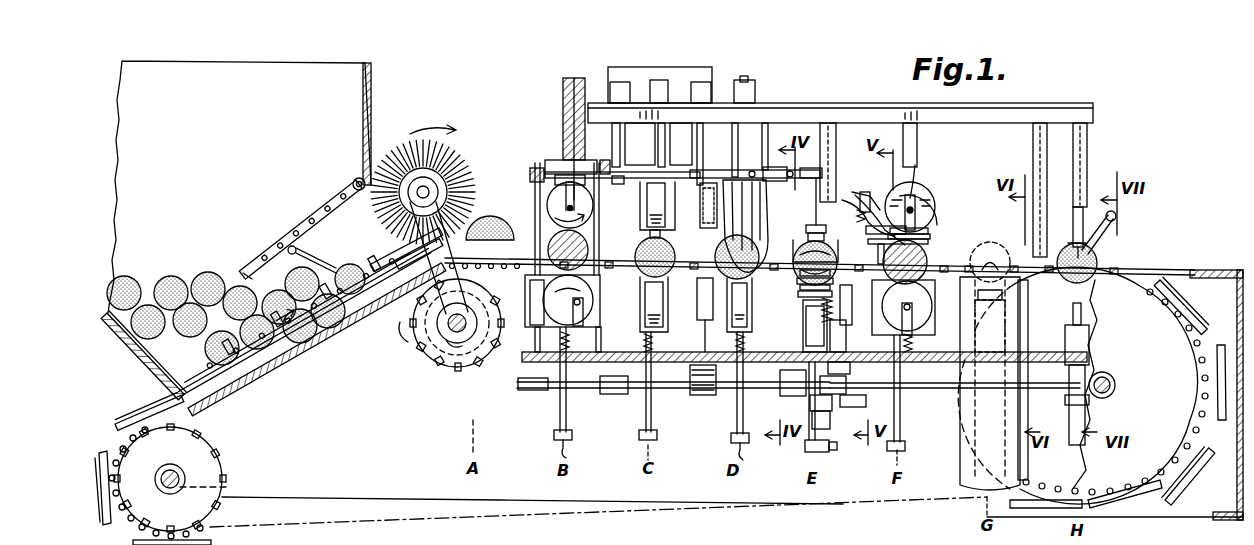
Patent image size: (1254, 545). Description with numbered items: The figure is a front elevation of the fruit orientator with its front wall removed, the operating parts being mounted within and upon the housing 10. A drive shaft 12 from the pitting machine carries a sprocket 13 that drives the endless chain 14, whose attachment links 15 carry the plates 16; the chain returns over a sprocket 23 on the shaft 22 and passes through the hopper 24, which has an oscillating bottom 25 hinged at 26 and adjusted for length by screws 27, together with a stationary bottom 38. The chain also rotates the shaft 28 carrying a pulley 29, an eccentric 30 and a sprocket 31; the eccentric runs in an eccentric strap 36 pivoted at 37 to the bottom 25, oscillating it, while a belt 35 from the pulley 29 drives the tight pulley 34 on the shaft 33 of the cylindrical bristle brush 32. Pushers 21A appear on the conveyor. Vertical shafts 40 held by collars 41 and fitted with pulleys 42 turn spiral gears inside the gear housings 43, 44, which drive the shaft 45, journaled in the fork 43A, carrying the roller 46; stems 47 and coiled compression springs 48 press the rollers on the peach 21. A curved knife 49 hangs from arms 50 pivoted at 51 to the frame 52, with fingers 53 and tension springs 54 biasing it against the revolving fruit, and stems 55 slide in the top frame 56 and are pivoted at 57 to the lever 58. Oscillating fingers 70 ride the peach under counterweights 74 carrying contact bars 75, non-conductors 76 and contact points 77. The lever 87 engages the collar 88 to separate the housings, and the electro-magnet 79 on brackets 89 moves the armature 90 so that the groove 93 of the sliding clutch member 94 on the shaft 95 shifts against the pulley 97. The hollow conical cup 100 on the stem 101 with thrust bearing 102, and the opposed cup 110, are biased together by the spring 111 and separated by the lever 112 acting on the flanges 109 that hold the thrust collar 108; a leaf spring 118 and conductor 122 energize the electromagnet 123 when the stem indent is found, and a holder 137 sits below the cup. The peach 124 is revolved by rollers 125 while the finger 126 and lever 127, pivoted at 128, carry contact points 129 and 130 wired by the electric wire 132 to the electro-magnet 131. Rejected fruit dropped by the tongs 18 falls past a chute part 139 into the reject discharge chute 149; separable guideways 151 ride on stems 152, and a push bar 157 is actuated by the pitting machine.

The housing 10 is at (445, 438).
The drive shaft 12 is at (1098, 374).
The sprocket 13 is at (1083, 385).
The endless chain 14 is at (214, 528).
The attachment links 15 is at (1203, 430).
The plates 16 is at (390, 270).
The tongs 18 is at (312, 352).
The peach 21 is at (1098, 262).
The conveyor pushers 21A is at (330, 347).
The shaft 22 is at (180, 472).
The sprocket 23 is at (218, 455).
The hopper 24 is at (372, 83).
The oscillating bottom 25 is at (252, 266).
The hinge 26 is at (357, 178).
The screws 27 is at (305, 226).
The shaft 28 is at (466, 320).
The pulley 29 is at (460, 370).
The eccentric 30 is at (415, 358).
The sprocket 31 is at (442, 370).
The cylindrical bristle brush 32 is at (450, 158).
The shaft 33 is at (448, 185).
The tight pulley 34 is at (405, 218).
The belt 35 is at (405, 255).
The eccentric strap 36 is at (405, 333).
The pivot 37 is at (302, 252).
The stationary bottom 38 is at (278, 373).
The vertical shafts 40 is at (500, 242).
The collars 41 is at (588, 368).
The pulleys 42 is at (535, 390).
The gear housing 43 is at (530, 284).
The fork 43A is at (752, 318).
The gear housing 44 is at (533, 192).
The shaft 45 is at (772, 295).
The roller 46 is at (546, 204).
The stems 47 is at (578, 78).
The coiled compression springs 48 is at (920, 347).
The curved knife 49 is at (657, 217).
The arms 50 is at (535, 238).
The pivot 51 is at (545, 160).
The frame 52 is at (552, 160).
The fingers 53 is at (535, 168).
The tension springs 54 is at (545, 178).
The stems 55 is at (680, 150).
The top frame 56 is at (866, 108).
The pivot 57 is at (625, 82).
The lever 58 is at (690, 70).
The oscillating fingers 70 is at (768, 228).
The counterweights 74 is at (770, 167).
The electrical contact bars 75 is at (665, 168).
The non-conductors 76 is at (749, 146).
The electrical contact points 77 is at (805, 178).
The electro-magnet 79 is at (668, 305).
The lever 87 is at (573, 436).
The collar 88 is at (568, 450).
The brackets 89 is at (843, 336).
The armature 90 is at (847, 384).
The groove 93 is at (795, 383).
The sliding clutch member 94 is at (820, 380).
The shaft 95 is at (832, 410).
The pulley 97 is at (702, 392).
The hollow conical cup 100 is at (812, 244).
The stem 101 is at (815, 225).
The thrust bearing 102 is at (805, 209).
The thrust collar 108 is at (815, 452).
The flanges 109 is at (838, 448).
The cup 110 is at (804, 278).
The spring 111 is at (805, 290).
The lever 112 is at (830, 428).
The leaf spring 118 is at (802, 248).
The electrical conductor 122 is at (800, 330).
The electromagnet 123 is at (804, 301).
The peach 124 is at (927, 258).
The rollers 125 is at (935, 198).
The finger 126 is at (932, 236).
The lever 127 is at (928, 243).
The pivot 128 is at (866, 228).
The contact point 129 is at (856, 194).
The adjustable contact point 130 is at (930, 225).
The electro-magnet 131 is at (833, 326).
The electric wire 132 is at (862, 257).
The holder 137 is at (800, 267).
The chute 139 is at (1016, 295).
The reject discharge chute 149 is at (962, 473).
The separable guideways 151 is at (1073, 230).
The stems 152 is at (1082, 214).
The push bar 157 is at (1114, 237).